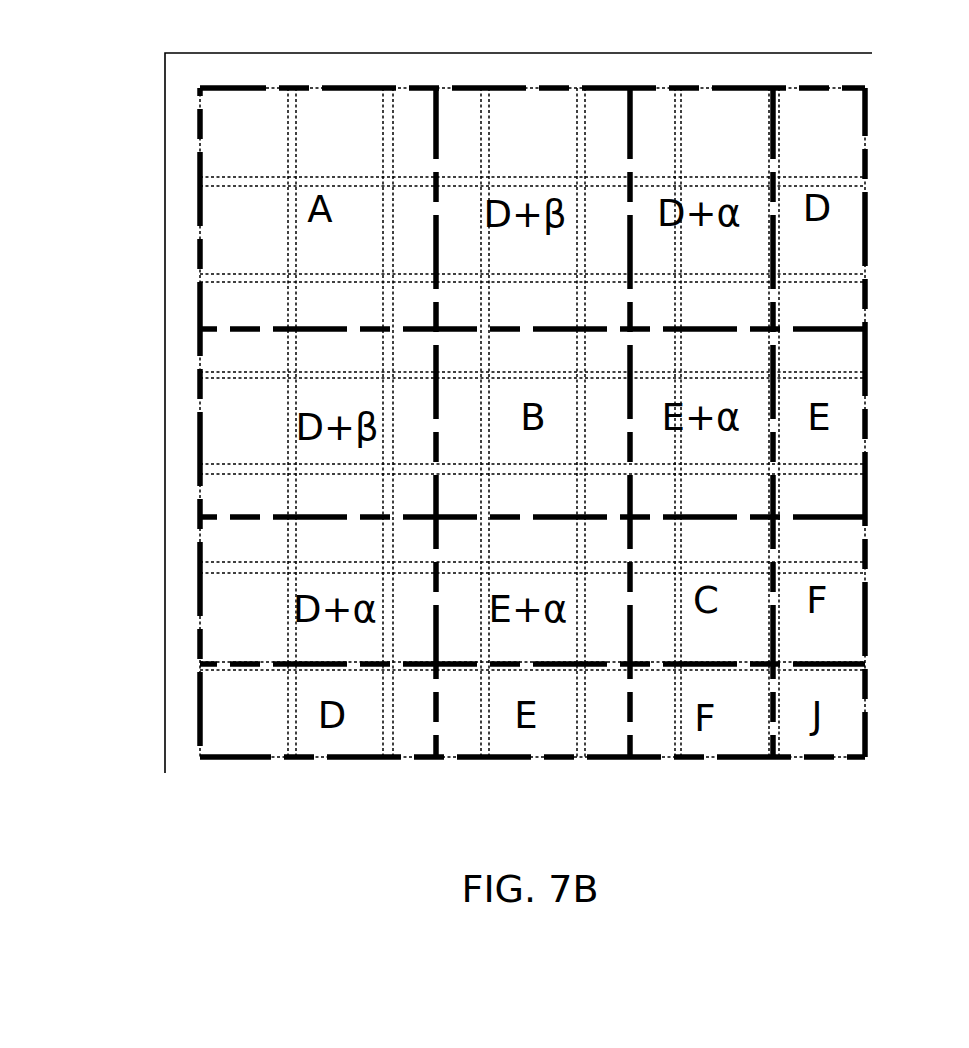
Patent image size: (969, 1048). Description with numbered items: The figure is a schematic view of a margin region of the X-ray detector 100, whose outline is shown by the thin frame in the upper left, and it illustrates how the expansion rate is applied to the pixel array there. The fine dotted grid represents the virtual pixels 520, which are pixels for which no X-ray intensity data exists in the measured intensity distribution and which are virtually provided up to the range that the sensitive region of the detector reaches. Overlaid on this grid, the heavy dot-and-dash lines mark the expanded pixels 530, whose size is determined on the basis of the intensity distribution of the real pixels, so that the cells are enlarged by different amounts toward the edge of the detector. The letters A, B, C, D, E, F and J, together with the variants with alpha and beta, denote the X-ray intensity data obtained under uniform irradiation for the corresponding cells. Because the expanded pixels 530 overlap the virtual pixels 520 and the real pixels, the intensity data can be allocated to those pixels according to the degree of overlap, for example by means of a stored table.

The X-ray detector 100 is at (165, 103).
The virtual pixels 520 is at (289, 95).
The expanded pixels 530 is at (200, 212).